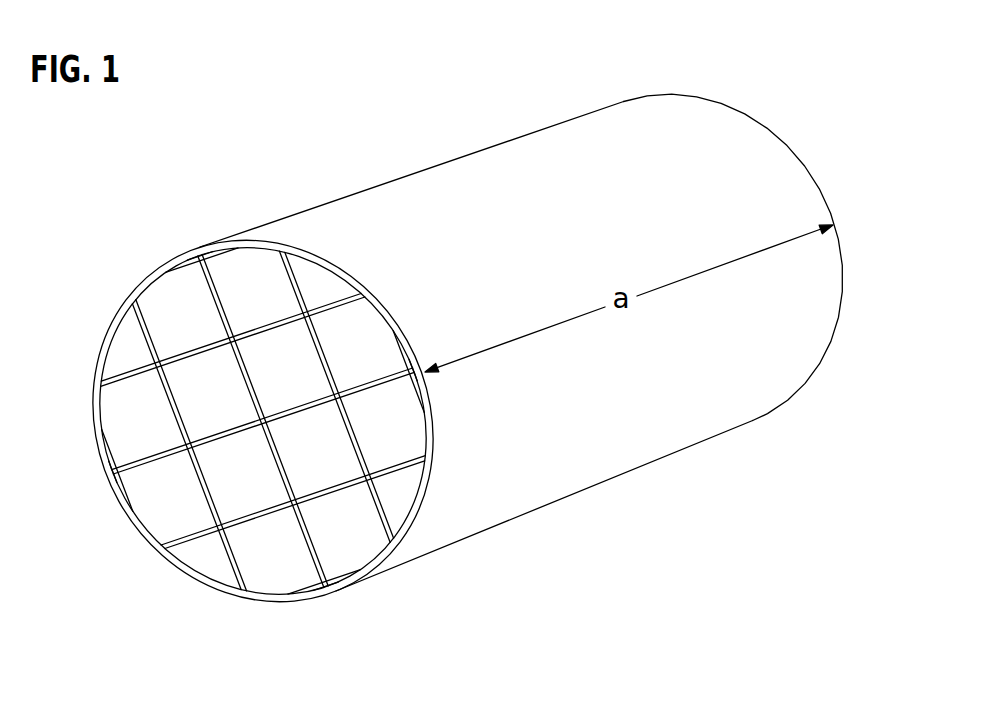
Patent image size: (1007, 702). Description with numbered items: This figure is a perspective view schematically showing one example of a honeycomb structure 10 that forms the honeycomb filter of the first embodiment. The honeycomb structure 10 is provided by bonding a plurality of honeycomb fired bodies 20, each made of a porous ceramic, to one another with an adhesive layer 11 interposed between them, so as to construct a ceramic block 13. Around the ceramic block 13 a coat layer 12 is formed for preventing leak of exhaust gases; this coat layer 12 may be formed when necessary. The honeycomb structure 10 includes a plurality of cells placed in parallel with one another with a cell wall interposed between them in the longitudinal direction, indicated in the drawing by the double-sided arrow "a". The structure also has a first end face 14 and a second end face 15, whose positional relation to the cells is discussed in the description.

The honeycomb structure 10 is at (461, 380).
The adhesive layer 11 is at (218, 533).
The coat layer 12 is at (427, 452).
The ceramic block 13 is at (278, 457).
The first end face 14 is at (114, 428).
The second end face 15 is at (851, 209).
The honeycomb fired body 20 is at (342, 513).